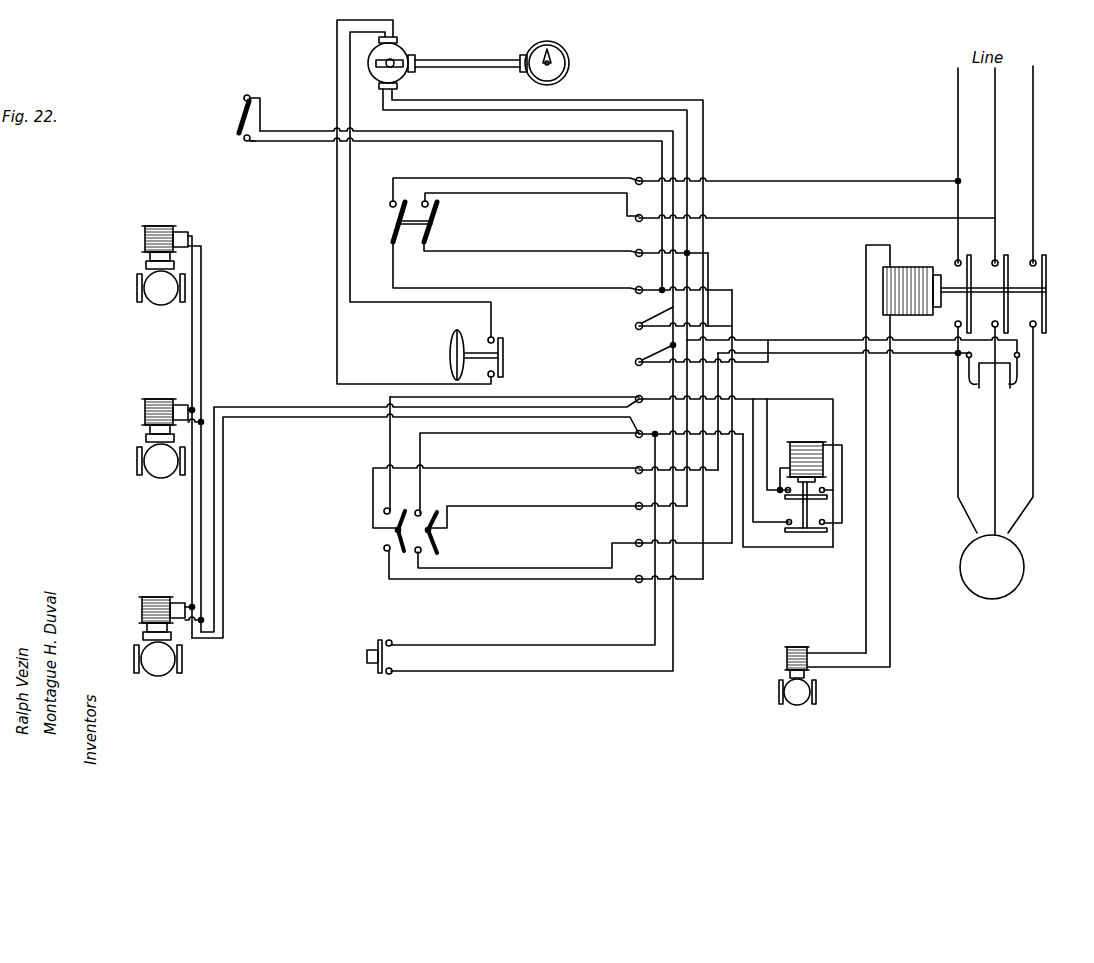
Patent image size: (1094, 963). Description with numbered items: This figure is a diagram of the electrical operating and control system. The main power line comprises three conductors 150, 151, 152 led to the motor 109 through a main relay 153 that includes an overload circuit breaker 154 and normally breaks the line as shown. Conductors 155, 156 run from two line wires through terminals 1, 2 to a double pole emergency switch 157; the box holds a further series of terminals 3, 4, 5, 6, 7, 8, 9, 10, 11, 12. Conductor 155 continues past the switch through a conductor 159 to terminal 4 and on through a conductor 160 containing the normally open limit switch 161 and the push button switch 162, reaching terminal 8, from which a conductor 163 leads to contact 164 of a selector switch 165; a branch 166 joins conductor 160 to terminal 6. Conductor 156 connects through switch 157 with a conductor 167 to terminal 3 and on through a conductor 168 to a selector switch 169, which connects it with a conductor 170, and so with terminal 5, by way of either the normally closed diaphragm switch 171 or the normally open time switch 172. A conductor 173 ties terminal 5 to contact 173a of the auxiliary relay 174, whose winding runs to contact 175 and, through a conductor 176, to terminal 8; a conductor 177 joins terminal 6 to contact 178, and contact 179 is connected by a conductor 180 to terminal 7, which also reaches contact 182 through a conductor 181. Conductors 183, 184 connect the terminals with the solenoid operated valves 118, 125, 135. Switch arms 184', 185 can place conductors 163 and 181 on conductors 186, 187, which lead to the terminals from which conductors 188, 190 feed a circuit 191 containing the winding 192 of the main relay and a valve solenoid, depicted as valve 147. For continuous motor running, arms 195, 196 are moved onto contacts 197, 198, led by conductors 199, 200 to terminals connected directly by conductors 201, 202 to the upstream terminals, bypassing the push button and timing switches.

The motor 109 is at (968, 589).
The solenoid operated valve 118 is at (154, 477).
The solenoid operated valve 125 is at (163, 289).
The solenoid operated valve 135 is at (167, 671).
The solenoid valve 147 is at (793, 700).
The conductor 150 is at (956, 126).
The conductor 151 is at (1000, 118).
The conductor 152 is at (1036, 171).
The main relay 153 is at (1046, 299).
The overload circuit breaker 154 is at (1011, 385).
The conductor 155 is at (808, 173).
The conductor 156 is at (834, 221).
The double pole emergency switch 157 is at (438, 228).
The conductor 159 is at (559, 289).
The conductor 160 is at (680, 157).
The limit switch 161 is at (238, 113).
The push button switch 162 is at (377, 666).
The conductor 163 is at (557, 434).
The switch contact 164 is at (422, 508).
The selector switch 165 is at (392, 539).
The branch 166 is at (671, 346).
The conductor 167 is at (559, 251).
The conductor 168 is at (690, 138).
The selector switch 169 is at (406, 49).
The conductor 170 is at (673, 106).
The diaphragm switch 171 is at (506, 358).
The time switch 172 is at (566, 38).
The conductor 173 is at (768, 379).
The contact 173a is at (787, 493).
The auxiliary relay 174 is at (820, 480).
The contact 175 is at (824, 521).
The conductor 176 is at (813, 548).
The conductor 177 is at (756, 420).
The contact 178 is at (787, 524).
The contact 179 is at (824, 490).
The conductor 180 is at (848, 392).
The conductor 181 is at (578, 389).
The contact 182 is at (395, 512).
The conductor 183 is at (293, 394).
The conductor 184 is at (415, 526).
The switch arm 184' is at (459, 522).
The switch arm 185 is at (372, 529).
The conductor 186 is at (570, 498).
The conductor 187 is at (527, 469).
The conductor 188 is at (641, 503).
The conductor 190 is at (644, 511).
The circuit 191 is at (891, 401).
The winding 192 is at (920, 266).
The switch arm 195 is at (437, 546).
The switch arm 196 is at (401, 556).
The contact 197 is at (417, 553).
The contact 198 is at (384, 551).
The conductor 199 is at (545, 569).
The conductor 200 is at (553, 578).
The conductor 201 is at (736, 307).
The conductor 202 is at (711, 279).
The terminal 1 is at (641, 173).
The terminal 2 is at (641, 210).
The terminal 3 is at (641, 245).
The terminal 4 is at (641, 282).
The terminal 5 is at (641, 318).
The terminal 6 is at (641, 354).
The terminal 7 is at (641, 391).
The terminal 8 is at (641, 426).
The terminal 9 is at (641, 462).
The terminal 10 is at (640, 498).
The terminal 11 is at (640, 535).
The terminal 12 is at (640, 571).